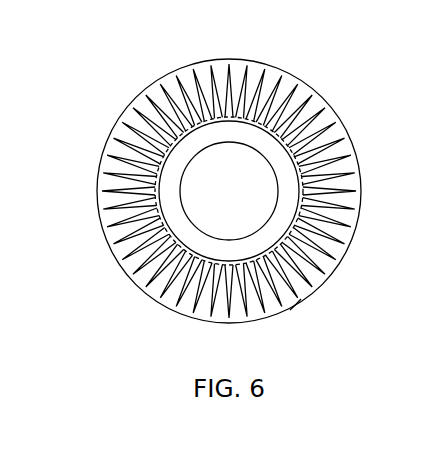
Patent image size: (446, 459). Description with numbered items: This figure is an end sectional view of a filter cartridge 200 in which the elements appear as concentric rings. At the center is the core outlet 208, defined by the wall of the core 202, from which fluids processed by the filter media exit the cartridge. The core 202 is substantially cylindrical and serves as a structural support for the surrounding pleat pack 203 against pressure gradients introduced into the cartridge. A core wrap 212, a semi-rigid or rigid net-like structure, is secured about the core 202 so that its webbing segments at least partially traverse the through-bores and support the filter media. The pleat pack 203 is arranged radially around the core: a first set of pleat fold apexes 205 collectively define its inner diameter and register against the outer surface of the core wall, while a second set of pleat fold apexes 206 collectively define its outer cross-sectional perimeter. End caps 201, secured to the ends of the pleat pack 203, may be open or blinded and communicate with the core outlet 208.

The filter cartridge 200 is at (155, 53).
The end caps 201 is at (126, 108).
The core 202 is at (293, 212).
The pleat pack 203 is at (335, 132).
The first set of pleat fold apexes 205 is at (172, 295).
The second set of pleat fold apexes 206 is at (286, 78).
The core outlet 208 is at (245, 200).
The core wrap 212 is at (304, 303).